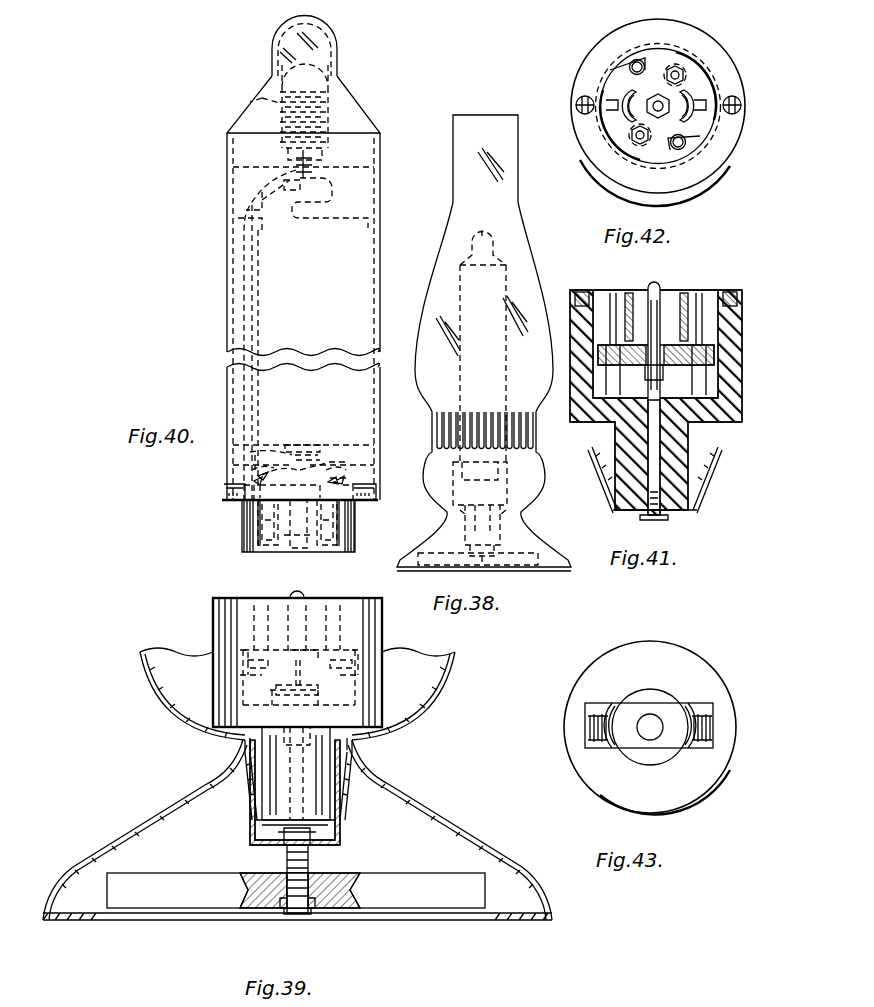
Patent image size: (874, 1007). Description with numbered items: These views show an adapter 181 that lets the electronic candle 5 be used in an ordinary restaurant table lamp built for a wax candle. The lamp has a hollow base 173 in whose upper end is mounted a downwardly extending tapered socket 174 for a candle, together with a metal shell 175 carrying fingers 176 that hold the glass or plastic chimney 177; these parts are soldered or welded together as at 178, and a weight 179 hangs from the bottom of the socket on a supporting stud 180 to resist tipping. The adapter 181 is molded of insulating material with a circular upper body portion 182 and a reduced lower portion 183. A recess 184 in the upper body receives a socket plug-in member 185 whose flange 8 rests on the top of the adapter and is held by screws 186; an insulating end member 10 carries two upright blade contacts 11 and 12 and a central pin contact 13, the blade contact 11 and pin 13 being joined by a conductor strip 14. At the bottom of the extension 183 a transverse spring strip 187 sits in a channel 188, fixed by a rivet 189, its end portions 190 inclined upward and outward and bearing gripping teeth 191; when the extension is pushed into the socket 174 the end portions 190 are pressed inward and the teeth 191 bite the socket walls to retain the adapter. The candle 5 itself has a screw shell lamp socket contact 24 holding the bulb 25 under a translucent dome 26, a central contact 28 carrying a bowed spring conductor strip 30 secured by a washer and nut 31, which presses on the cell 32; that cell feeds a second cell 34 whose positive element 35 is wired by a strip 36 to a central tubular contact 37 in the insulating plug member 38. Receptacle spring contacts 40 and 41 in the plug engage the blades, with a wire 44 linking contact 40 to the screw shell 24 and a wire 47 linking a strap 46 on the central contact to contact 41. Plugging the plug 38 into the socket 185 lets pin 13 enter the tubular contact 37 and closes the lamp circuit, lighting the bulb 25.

In FIG. 40, the electronic candle 5 is at (396, 256).
In FIG. 38, the electronic candle 5 is at (507, 348).
In FIG. 42, the upper flange 8 is at (735, 128).
In FIG. 41, the upper flange 8 is at (735, 292).
In FIG. 41, the end member 10 is at (745, 345).
In FIG. 42, the blade contact 11 is at (627, 107).
In FIG. 41, the blade contact 11 is at (628, 296).
In FIG. 39, the blade contact 11 is at (262, 604).
In FIG. 42, the blade contact 12 is at (692, 103).
In FIG. 41, the blade contact 12 is at (684, 296).
In FIG. 39, the blade contact 12 is at (340, 610).
In FIG. 42, the central pin contact 13 is at (658, 112).
In FIG. 41, the central pin contact 13 is at (656, 284).
In FIG. 39, the central pin contact 13 is at (304, 596).
In FIG. 41, the conductor strip 14 is at (617, 387).
In FIG. 39, the conductor strip 14 is at (298, 677).
In FIG. 40, the screw shell lamp socket contact 24 is at (266, 102).
In FIG. 40, the electric lamp bulb 25 is at (332, 62).
In FIG. 40, the domed member 26 is at (340, 42).
In FIG. 38, the domed member 26 is at (483, 240).
In FIG. 40, the central contact 28 is at (312, 164).
In FIG. 40, the spring conductor strip 30 is at (333, 188).
In FIG. 40, the washer and nut 31 is at (280, 190).
In FIG. 40, the sealed type electric cell 32 is at (381, 280).
In FIG. 40, the second sealed cell 34 is at (362, 404).
In FIG. 40, the positive element 35 is at (302, 448).
In FIG. 40, the conductor strip 36 is at (272, 448).
In FIG. 40, the central tubular contact member 37 is at (330, 458).
In FIG. 40, the insulating plug member 38 is at (345, 540).
In FIG. 38, the insulating plug member 38 is at (480, 493).
In FIG. 40, the receptacle spring contact 40 is at (240, 518).
In FIG. 40, the receptacle spring contact 41 is at (342, 518).
In FIG. 40, the conductor wire connection 44 is at (262, 310).
In FIG. 40, the contact member strap 46 is at (258, 225).
In FIG. 40, the conductor wire 47 is at (238, 310).
In FIG. 38, the hollow base 173 is at (524, 540).
In FIG. 39, the hollow base 173 is at (448, 820).
In FIG. 38, the tapered socket 174 is at (503, 530).
In FIG. 39, the tapered socket 174 is at (340, 830).
In FIG. 38, the metal shell 175 is at (538, 487).
In FIG. 39, the metal shell 175 is at (418, 718).
In FIG. 38, the fingers 176 is at (536, 430).
In FIG. 38, the chimney 177 is at (532, 192).
In FIG. 39, the soldered or welded joint 178 is at (360, 745).
In FIG. 38, the weight 179 is at (505, 570).
In FIG. 39, the weight 179 is at (412, 875).
In FIG. 39, the supporting stud 180 is at (287, 862).
In FIG. 38, the adapter 181 is at (512, 478).
In FIG. 41, the adapter 181 is at (748, 364).
In FIG. 39, the adapter 181 is at (372, 642).
In FIG. 43, the adapter 181 is at (724, 668).
In FIG. 41, the circular upper body portion 182 is at (745, 320).
In FIG. 39, the circular upper body portion 182 is at (376, 688).
In FIG. 43, the circular upper body portion 182 is at (706, 785).
In FIG. 41, the reduced lower portion 183 is at (690, 440).
In FIG. 39, the reduced lower portion 183 is at (318, 780).
In FIG. 43, the reduced lower portion 183 is at (664, 762).
In FIG. 41, the socket or recess 184 is at (706, 385).
In FIG. 39, the socket or recess 184 is at (358, 704).
In FIG. 42, the socket plug-in member 185 is at (634, 158).
In FIG. 41, the socket plug-in member 185 is at (600, 298).
In FIG. 39, the socket plug-in member 185 is at (374, 620).
In FIG. 42, the screws 186 is at (580, 114).
In FIG. 41, the screws 186 is at (737, 300).
In FIG. 41, the transverse spring strip 187 is at (682, 514).
In FIG. 43, the transverse channel 188 is at (662, 718).
In FIG. 41, the rivet 189 is at (648, 438).
In FIG. 43, the rivet 189 is at (650, 735).
In FIG. 41, the end portions 190 is at (594, 462).
In FIG. 39, the end portions 190 is at (246, 790).
In FIG. 43, the end portions 190 is at (596, 746).
In FIG. 41, the gripping teeth 191 is at (600, 488).
In FIG. 39, the gripping teeth 191 is at (253, 808).
In FIG. 43, the gripping teeth 191 is at (588, 726).